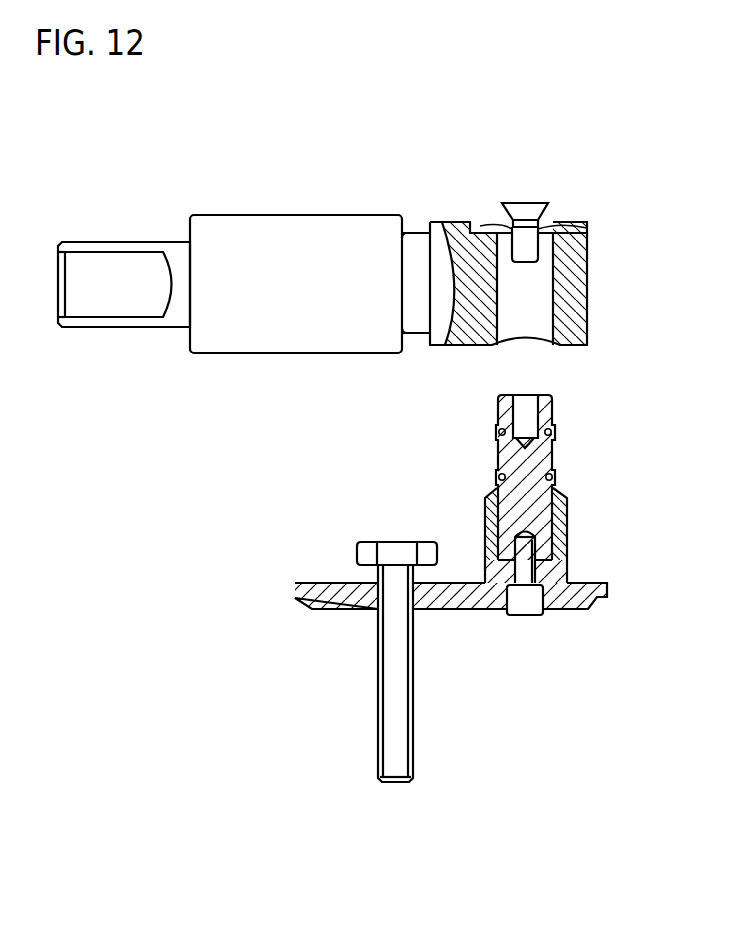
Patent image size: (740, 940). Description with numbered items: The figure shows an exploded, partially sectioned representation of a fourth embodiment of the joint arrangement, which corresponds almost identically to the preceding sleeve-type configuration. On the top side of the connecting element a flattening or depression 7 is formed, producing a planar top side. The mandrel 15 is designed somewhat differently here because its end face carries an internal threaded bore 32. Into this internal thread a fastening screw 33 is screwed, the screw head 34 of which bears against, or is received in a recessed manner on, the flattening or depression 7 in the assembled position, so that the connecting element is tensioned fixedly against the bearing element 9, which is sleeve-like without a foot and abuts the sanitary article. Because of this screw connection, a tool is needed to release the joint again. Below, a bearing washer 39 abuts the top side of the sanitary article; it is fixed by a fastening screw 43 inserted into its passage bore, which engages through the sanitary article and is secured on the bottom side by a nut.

The flattening or depression 7 is at (478, 222).
The screw head 34 is at (517, 203).
The fastening screw 33 is at (540, 228).
The internal threaded bore 32 is at (553, 408).
The mandrel 15 is at (553, 454).
The bearing element 9 is at (568, 523).
The bearing washer 39 is at (296, 592).
The fastening screw 43 is at (392, 663).